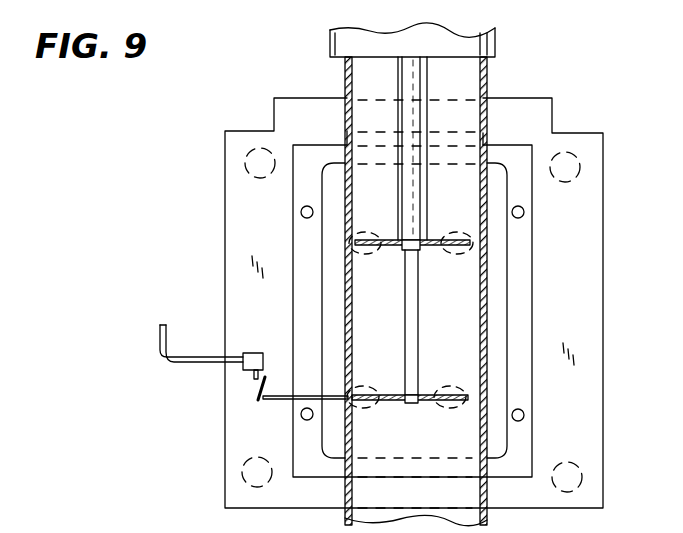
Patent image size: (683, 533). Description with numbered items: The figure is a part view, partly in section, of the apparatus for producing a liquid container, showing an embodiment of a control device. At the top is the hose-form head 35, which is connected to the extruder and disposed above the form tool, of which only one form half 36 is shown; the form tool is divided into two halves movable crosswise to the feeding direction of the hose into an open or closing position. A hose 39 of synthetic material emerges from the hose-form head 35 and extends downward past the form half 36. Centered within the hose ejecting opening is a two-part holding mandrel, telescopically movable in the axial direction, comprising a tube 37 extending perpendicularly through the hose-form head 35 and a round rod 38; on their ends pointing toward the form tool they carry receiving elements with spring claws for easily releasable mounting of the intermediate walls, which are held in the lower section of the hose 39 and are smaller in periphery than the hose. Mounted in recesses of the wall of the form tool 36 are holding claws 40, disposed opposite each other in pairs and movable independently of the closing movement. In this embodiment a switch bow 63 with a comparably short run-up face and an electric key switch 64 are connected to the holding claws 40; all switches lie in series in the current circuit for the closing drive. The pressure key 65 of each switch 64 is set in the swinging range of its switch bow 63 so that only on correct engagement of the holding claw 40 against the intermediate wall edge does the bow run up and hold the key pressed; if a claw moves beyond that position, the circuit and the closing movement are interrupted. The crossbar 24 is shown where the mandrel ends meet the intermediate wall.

The hose-form head 35 is at (468, 42).
The hose 39 is at (487, 80).
The tube 37 is at (413, 110).
The form half 36 is at (238, 222).
The electric key switch 64 is at (245, 352).
The pressure key 65 is at (255, 379).
The switch bow 63 is at (260, 400).
The crossbar 24 is at (395, 250).
The holding claw 40 is at (460, 256).
The round rod 38 is at (420, 332).